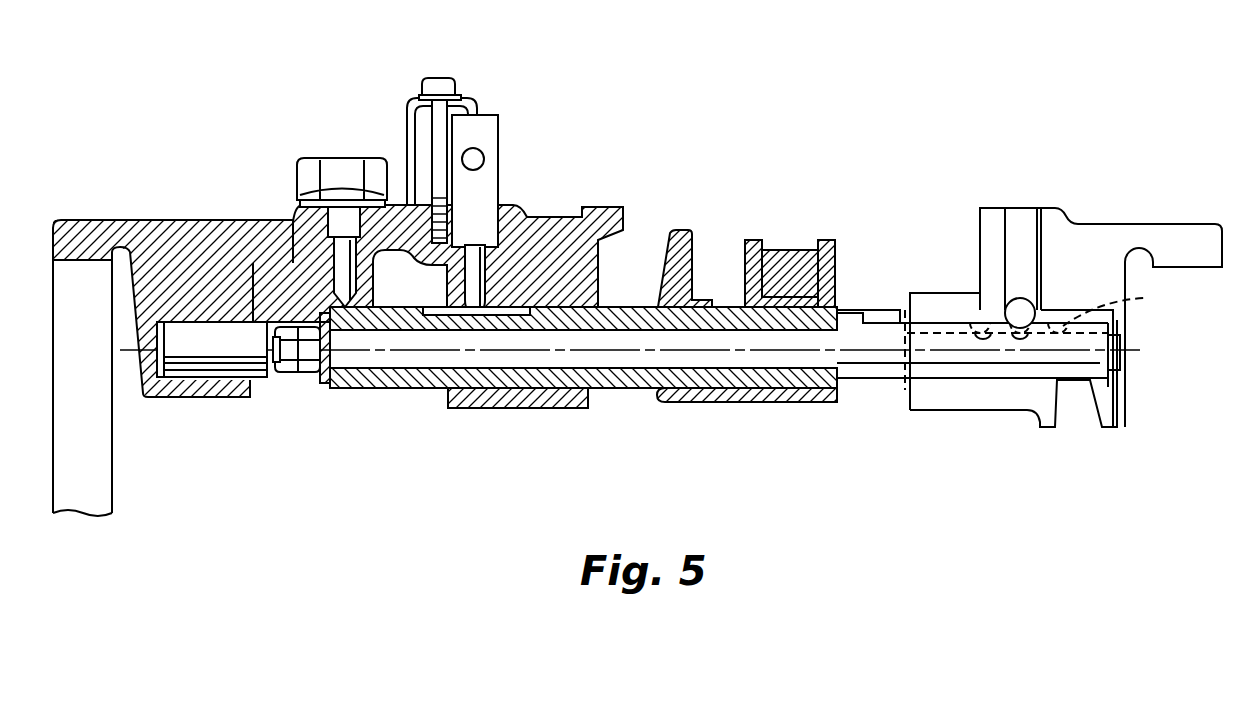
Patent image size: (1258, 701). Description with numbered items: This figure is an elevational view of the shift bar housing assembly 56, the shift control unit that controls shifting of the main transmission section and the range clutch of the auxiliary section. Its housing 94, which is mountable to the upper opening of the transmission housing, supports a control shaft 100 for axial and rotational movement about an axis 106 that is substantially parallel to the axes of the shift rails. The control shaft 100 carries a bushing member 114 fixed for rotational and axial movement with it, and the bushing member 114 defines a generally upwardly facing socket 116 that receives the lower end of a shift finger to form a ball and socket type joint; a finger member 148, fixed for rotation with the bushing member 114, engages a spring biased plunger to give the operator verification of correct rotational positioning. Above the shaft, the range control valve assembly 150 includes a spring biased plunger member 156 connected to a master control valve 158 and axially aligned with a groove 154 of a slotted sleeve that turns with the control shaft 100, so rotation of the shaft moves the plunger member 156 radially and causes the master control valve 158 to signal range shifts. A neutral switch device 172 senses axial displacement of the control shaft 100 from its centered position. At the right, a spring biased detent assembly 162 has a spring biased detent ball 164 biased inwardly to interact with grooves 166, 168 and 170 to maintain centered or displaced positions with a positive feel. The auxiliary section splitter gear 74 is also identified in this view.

The shift bar housing 94 is at (199, 229).
The neutral switch device 172 is at (349, 138).
The auxiliary section splitter gear 74 is at (356, 283).
The range control valve assembly 150 is at (474, 79).
The master control valve 158 is at (478, 142).
The spring biased plunger member 156 is at (494, 265).
The axis 106 is at (391, 335).
The groove 154 is at (457, 318).
The control shaft 100 is at (693, 400).
The finger member 148 is at (693, 240).
The socket 116 is at (770, 262).
The bushing member 114 is at (833, 258).
The spring biased detent assembly 162 is at (1054, 246).
The spring biased detent ball 164 is at (1022, 312).
The groove 166 is at (1123, 305).
The shift bar housing assembly 56 is at (1229, 238).
The groove 170 is at (985, 333).
The groove 168 is at (1020, 333).